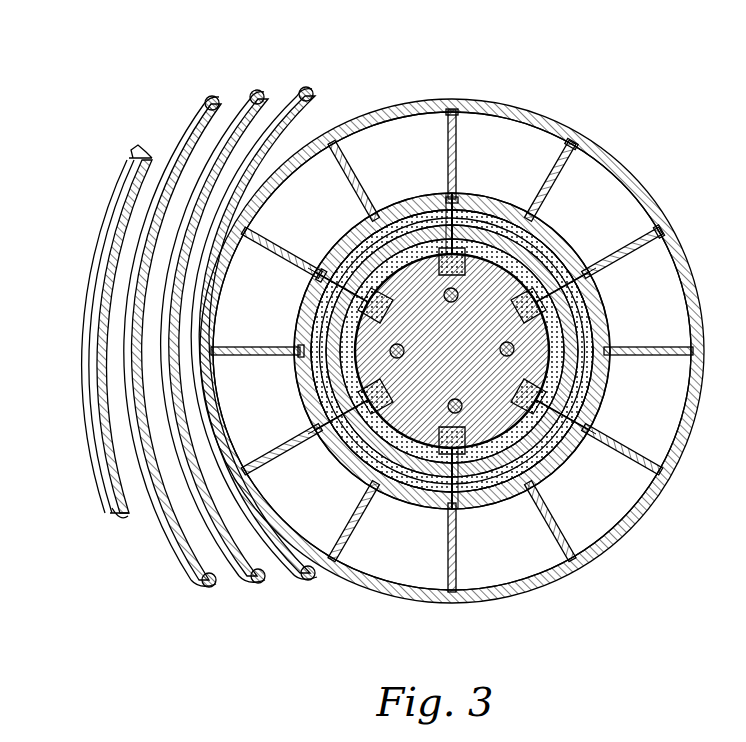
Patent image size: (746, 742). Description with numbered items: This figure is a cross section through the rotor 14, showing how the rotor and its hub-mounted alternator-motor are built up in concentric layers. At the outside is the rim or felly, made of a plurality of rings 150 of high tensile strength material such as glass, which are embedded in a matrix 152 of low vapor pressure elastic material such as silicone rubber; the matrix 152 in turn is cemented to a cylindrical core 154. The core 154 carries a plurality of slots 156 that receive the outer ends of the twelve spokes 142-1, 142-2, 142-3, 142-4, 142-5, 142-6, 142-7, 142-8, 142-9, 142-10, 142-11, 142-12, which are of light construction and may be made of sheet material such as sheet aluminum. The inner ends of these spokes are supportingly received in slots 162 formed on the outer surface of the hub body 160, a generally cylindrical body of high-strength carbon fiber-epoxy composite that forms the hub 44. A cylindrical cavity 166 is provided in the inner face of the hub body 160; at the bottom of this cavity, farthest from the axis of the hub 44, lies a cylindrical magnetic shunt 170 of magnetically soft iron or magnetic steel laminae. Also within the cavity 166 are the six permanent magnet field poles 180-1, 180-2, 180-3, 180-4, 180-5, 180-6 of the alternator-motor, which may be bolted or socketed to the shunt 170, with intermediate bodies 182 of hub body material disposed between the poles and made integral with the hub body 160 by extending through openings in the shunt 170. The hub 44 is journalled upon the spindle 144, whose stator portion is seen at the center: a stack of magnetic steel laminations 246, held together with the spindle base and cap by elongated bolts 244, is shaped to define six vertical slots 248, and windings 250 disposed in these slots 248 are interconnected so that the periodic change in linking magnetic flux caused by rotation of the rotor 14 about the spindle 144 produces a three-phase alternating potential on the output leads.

The rotor 14 is at (182, 115).
The hub 44 is at (496, 185).
The spoke 142-1 is at (258, 346).
The spoke 142-2 is at (292, 247).
The spoke 142-3 is at (347, 172).
The spoke 142-4 is at (458, 140).
The spoke 142-5 is at (556, 185).
The spoke 142-6 is at (614, 257).
The spoke 142-7 is at (645, 356).
The spoke 142-8 is at (616, 448).
The spoke 142-9 is at (548, 524).
The spoke 142-10 is at (448, 532).
The spoke 142-11 is at (358, 493).
The spoke 142-12 is at (298, 442).
The spindle assembly 144 is at (548, 478).
The rings 150 is at (136, 158).
The matrix 152 is at (117, 213).
The cylindrical core 154 is at (435, 97).
The slots 156 is at (458, 100).
The hub body 160 is at (292, 372).
The slots 162 is at (447, 193).
The cylindrical cavity 166 is at (603, 335).
The magnetic shunt 170 is at (598, 322).
The permanent magnet field pole 180-1 is at (405, 358).
The permanent magnet field pole 180-2 is at (416, 236).
The permanent magnet field pole 180-3 is at (528, 236).
The permanent magnet field pole 180-4 is at (545, 360).
The permanent magnet field pole 180-5 is at (495, 470).
The permanent magnet field pole 180-6 is at (422, 470).
The intermediate bodies 182 is at (580, 398).
The elongated bolts 244 is at (472, 410).
The magnetic steel laminations 246 is at (604, 372).
The vertical slots 248 is at (446, 274).
The windings 250 is at (372, 268).